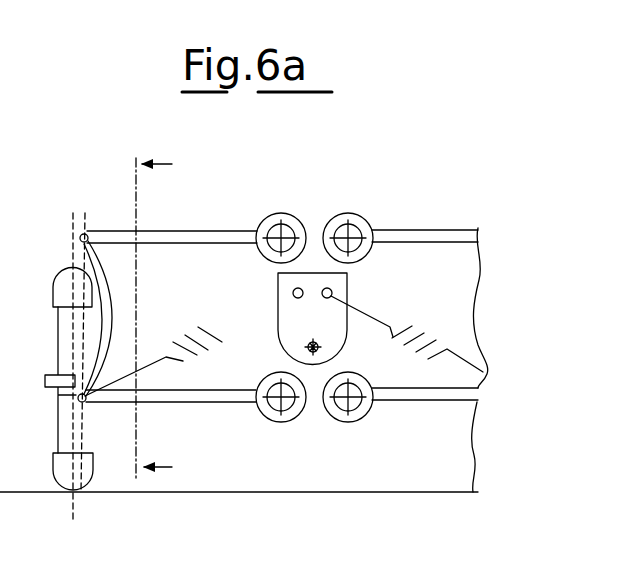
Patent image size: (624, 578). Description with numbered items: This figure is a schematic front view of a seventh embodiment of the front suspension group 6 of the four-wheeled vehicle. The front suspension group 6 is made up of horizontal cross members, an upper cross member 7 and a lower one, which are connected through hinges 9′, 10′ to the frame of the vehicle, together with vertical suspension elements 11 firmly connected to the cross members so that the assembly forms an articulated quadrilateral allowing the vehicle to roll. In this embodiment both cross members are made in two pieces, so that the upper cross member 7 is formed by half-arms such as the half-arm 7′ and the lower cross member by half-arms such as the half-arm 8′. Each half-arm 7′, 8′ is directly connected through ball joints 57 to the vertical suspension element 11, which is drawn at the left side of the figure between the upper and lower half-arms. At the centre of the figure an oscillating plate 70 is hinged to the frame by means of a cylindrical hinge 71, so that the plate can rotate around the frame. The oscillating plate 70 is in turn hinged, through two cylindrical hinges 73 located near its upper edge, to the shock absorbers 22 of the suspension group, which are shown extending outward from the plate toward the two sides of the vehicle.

The front suspension group 6 is at (412, 168).
The upper cross member 7 is at (284, 194).
The half-arm of upper cross member 7′ is at (178, 238).
The half-arm of lower cross member 8′ is at (204, 400).
The hinge 9′ is at (290, 216).
The hinge 10′ is at (285, 404).
The vertical suspension element 11 is at (107, 308).
The shock absorber 22 is at (294, 296).
The ball joint 57 is at (88, 233).
The oscillating plate 70 is at (338, 295).
The cylindrical hinge 71 is at (320, 348).
The cylindrical hinge 73 is at (293, 291).